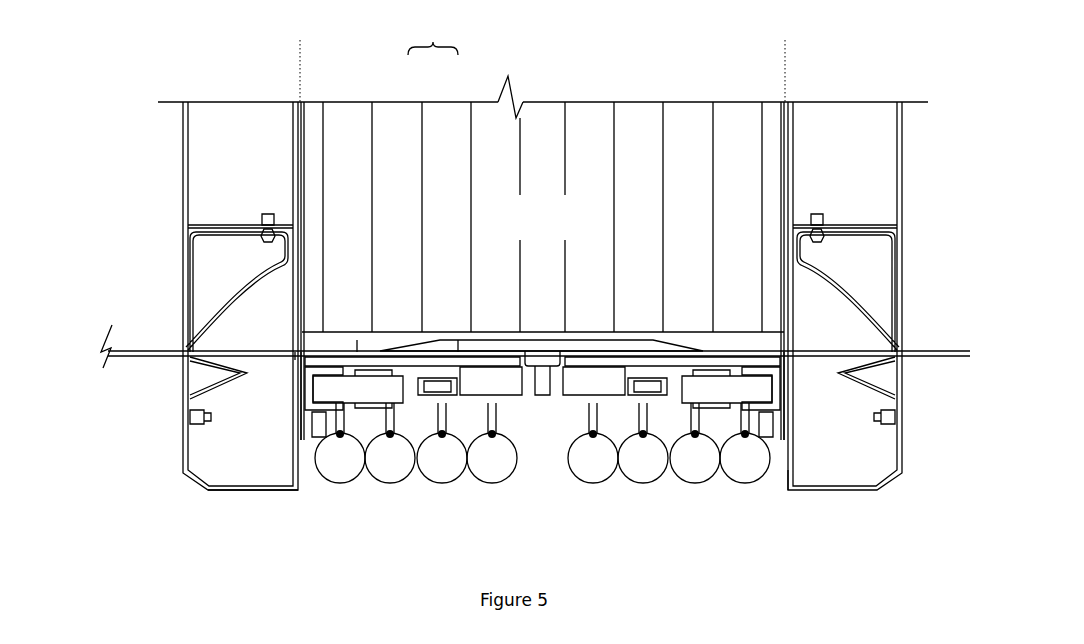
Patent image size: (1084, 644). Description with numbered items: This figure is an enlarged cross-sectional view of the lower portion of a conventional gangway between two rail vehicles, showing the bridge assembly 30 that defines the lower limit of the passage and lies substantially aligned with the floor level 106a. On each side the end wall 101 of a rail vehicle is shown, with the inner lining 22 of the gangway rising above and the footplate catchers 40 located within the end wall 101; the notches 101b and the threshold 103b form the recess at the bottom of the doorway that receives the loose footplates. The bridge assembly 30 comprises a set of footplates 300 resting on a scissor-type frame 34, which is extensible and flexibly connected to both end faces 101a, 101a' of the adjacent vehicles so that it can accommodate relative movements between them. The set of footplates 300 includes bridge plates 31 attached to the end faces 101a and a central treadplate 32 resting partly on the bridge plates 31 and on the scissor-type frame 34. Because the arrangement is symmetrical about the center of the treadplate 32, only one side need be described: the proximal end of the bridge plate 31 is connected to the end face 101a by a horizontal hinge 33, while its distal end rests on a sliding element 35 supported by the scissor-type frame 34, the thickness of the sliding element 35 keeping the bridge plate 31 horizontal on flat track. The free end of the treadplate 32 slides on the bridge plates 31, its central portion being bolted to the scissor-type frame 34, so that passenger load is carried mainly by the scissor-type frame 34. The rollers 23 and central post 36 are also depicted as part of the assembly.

The inner lining 22 is at (728, 176).
The rollers 23 is at (744, 488).
The bridge assembly 30 is at (542, 383).
The bridge plate 31 is at (357, 345).
The central treadplate 32 is at (458, 345).
The horizontal hinge 33 is at (297, 355).
The scissor-type frame 34 is at (483, 383).
The sliding element 35 is at (393, 367).
The central post 36 is at (545, 385).
The footplate catcher 40 is at (226, 270).
The end wall 101 is at (242, 128).
The end face 101a is at (292, 518).
The end face 101a' is at (825, 507).
The notch 101b is at (181, 268).
The threshold 103b is at (242, 340).
The floor level 106a is at (140, 344).
The set of footplates 300 is at (433, 35).